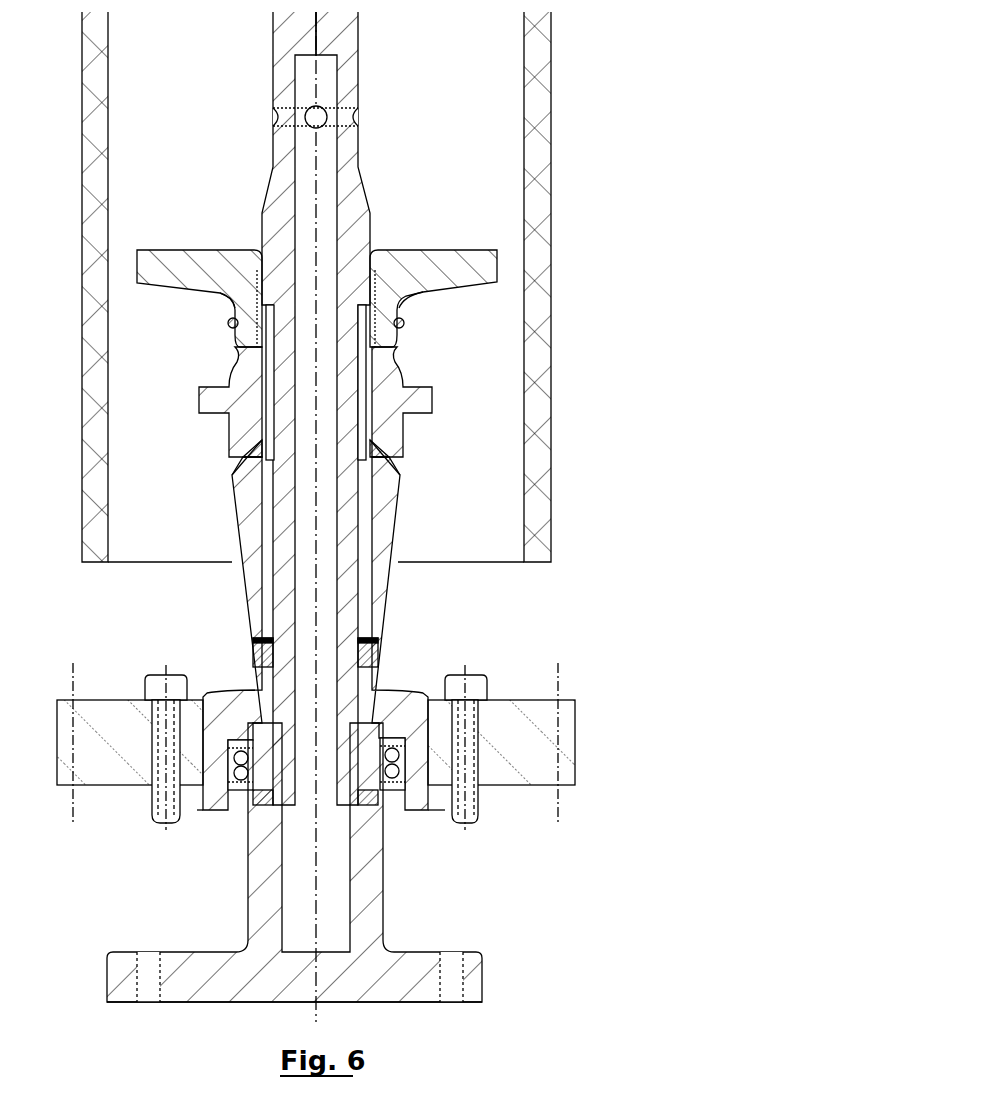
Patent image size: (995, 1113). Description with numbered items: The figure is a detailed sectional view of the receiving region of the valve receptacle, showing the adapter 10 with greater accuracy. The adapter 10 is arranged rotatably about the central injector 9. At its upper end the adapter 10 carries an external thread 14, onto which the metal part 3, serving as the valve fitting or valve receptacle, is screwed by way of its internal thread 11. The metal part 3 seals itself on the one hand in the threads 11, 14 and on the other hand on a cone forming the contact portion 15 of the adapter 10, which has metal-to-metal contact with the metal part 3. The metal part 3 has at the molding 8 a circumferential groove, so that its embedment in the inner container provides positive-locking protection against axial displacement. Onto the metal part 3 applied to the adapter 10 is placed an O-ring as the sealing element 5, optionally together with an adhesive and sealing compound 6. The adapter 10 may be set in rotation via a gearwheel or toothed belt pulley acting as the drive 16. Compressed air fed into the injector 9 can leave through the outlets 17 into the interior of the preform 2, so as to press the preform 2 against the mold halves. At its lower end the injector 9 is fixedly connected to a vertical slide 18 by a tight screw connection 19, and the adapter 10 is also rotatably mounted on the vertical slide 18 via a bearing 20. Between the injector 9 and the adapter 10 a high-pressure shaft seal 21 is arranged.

The preform 2 is at (553, 40).
The outlets 17 is at (366, 118).
The injector 9 is at (366, 155).
The metal part 3 is at (498, 267).
The adhesive and sealing compound 6 is at (406, 300).
The sealing element 5 is at (409, 325).
The molding 8 is at (394, 356).
The internal thread 11 is at (490, 365).
The external thread 14 is at (381, 387).
The contact portion 15 is at (384, 441).
The adapter 10 is at (401, 510).
The high-pressure shaft seal 21 is at (381, 655).
The drive 16 is at (576, 745).
The bearing 20 is at (411, 771).
The screw connection 19 is at (353, 798).
The vertical slide 18 is at (486, 990).